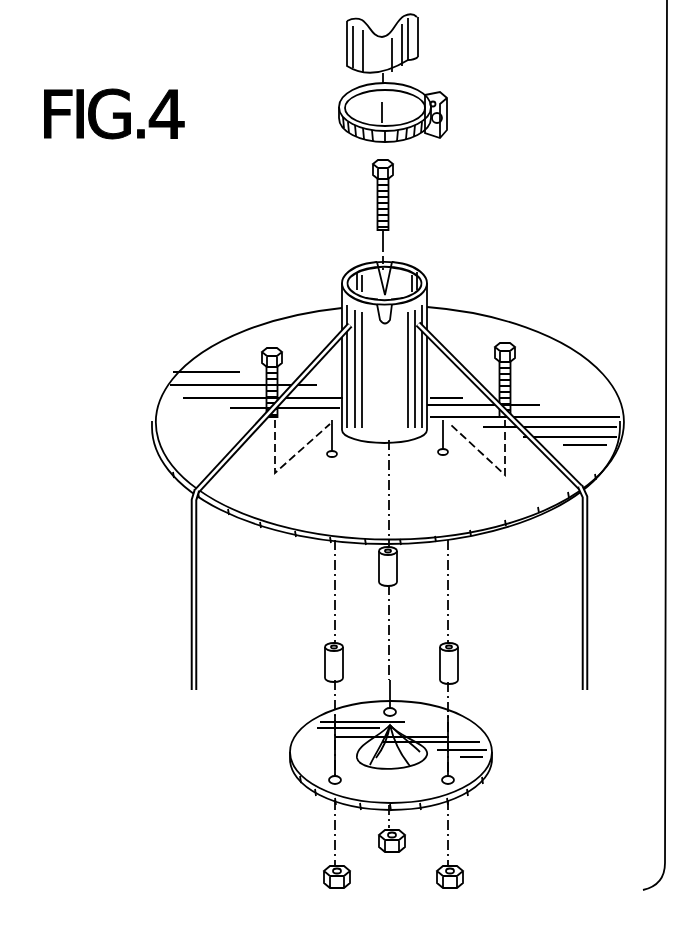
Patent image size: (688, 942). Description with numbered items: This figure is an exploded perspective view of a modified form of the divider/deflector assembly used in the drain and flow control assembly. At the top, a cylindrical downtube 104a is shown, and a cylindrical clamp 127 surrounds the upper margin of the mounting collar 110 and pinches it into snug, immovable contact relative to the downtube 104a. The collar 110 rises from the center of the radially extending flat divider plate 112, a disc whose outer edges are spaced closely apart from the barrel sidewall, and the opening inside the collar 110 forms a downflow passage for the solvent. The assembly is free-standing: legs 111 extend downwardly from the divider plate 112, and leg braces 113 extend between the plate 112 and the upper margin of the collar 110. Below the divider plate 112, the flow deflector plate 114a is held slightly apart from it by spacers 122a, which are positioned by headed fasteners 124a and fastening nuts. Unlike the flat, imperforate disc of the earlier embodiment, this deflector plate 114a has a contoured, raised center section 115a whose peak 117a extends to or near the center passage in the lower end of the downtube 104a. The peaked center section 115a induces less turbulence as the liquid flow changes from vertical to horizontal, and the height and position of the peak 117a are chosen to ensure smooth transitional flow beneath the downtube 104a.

The downtube 104a is at (418, 47).
The cylindrical clamp 127 is at (433, 138).
The mounting collar 110 is at (398, 278).
The divider plate 112 is at (450, 318).
The leg braces 113 is at (330, 345).
The headed fasteners 124a is at (507, 343).
The legs 111 is at (198, 551).
The spacers 122a is at (328, 648).
The peak 117a is at (390, 725).
The flow deflector plate 114a is at (466, 733).
The contoured center section 115a is at (380, 760).